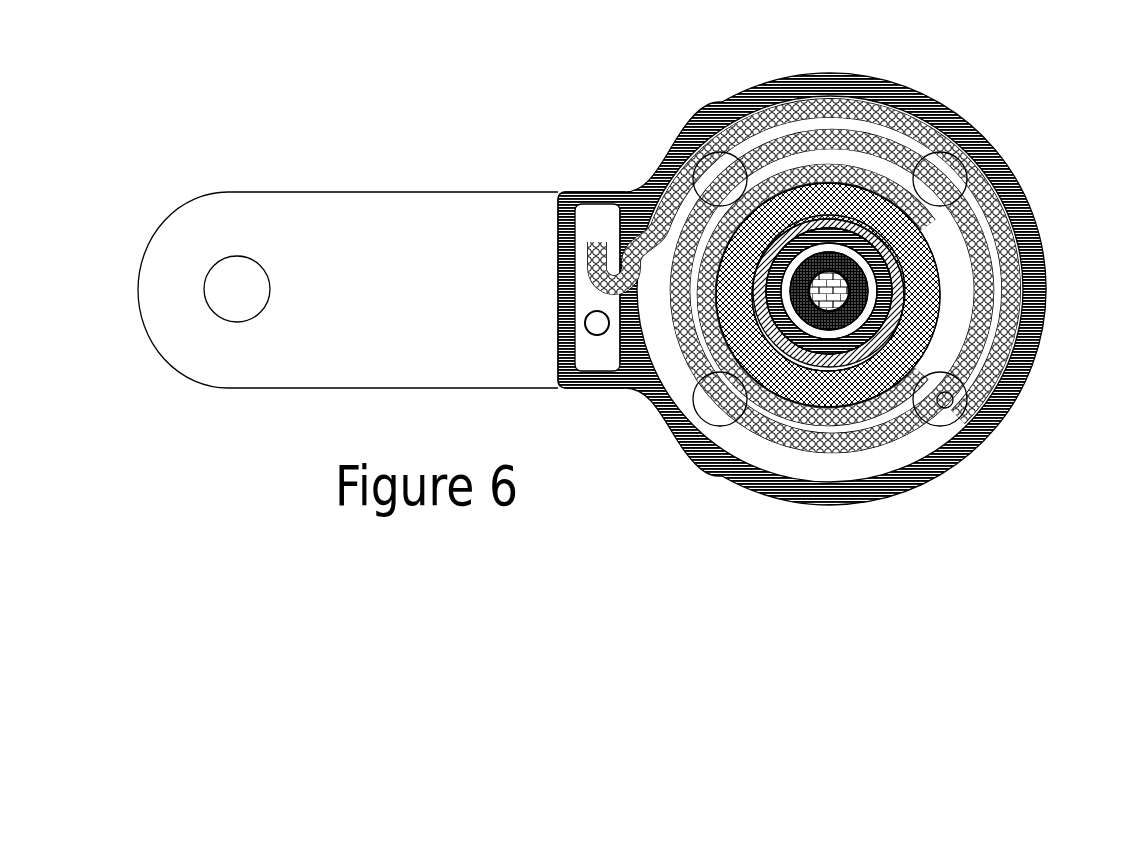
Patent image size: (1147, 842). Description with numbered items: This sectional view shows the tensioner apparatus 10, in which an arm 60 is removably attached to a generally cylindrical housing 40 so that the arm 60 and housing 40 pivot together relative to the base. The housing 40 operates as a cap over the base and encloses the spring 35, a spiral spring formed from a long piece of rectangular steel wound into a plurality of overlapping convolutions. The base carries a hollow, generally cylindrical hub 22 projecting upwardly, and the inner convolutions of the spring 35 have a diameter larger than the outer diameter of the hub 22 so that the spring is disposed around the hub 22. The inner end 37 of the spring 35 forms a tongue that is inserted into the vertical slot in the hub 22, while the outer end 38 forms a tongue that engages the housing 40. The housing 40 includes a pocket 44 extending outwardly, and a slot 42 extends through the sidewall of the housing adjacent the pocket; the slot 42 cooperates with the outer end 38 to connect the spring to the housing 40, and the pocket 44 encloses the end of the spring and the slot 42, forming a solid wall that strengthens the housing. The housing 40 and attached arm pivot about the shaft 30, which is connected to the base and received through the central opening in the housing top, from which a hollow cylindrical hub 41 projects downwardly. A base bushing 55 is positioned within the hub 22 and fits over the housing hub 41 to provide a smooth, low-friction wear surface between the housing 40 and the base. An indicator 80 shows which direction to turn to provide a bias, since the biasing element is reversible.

The tensioner apparatus 10 is at (398, 130).
The hub 22 is at (934, 328).
The shaft 30 is at (815, 333).
The spring 35 is at (903, 123).
The inner end of the spring 37 is at (933, 249).
The outer end of the spring 38 is at (600, 242).
The housing 40 is at (825, 90).
The housing hub 41 is at (825, 360).
The slot 42 is at (623, 302).
The pocket 44 is at (568, 203).
The base bushing 55 is at (879, 366).
The arm 60 is at (380, 310).
The indicator 80 is at (597, 334).